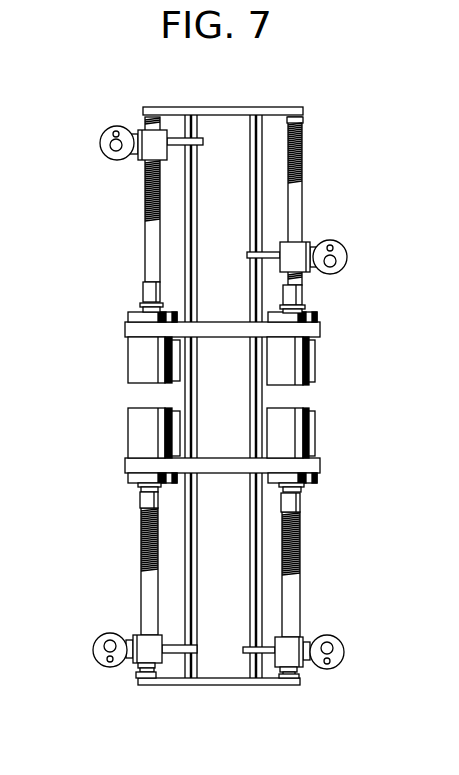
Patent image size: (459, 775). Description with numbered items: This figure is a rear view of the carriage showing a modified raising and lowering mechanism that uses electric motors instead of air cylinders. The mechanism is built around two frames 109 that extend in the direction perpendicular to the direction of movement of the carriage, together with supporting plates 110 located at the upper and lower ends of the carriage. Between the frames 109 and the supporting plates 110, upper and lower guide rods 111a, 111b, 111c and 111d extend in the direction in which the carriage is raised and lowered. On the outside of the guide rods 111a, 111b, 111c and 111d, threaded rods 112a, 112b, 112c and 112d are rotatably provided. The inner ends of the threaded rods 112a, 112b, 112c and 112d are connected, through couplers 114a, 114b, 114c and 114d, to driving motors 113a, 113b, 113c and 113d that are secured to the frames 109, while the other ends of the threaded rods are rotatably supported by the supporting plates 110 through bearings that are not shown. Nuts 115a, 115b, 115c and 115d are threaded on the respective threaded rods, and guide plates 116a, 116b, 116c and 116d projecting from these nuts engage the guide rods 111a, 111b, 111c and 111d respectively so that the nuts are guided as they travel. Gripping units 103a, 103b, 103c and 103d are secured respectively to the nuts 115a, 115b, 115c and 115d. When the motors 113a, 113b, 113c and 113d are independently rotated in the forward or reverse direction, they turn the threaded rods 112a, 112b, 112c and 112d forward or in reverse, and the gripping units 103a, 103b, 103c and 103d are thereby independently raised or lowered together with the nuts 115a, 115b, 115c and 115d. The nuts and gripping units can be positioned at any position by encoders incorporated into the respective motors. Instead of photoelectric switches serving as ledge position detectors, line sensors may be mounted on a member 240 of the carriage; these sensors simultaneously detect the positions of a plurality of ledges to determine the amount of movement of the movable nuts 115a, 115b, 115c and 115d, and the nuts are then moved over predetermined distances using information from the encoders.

The supporting plate 110 is at (212, 107).
The frame 109 is at (125, 329).
The guide rod 111a is at (198, 178).
The guide rod 111b is at (251, 218).
The guide rod 111c is at (194, 525).
The guide rod 111d is at (247, 567).
The threaded rod 112a is at (145, 236).
The threaded rod 112b is at (302, 158).
The threaded rod 112c is at (140, 548).
The threaded rod 112d is at (301, 549).
The driving motor 113a is at (128, 364).
The driving motor 113b is at (313, 365).
The driving motor 113c is at (128, 428).
The driving motor 113d is at (313, 430).
The coupler 114a is at (143, 290).
The coupler 114b is at (302, 296).
The coupler 114c is at (140, 497).
The coupler 114d is at (301, 503).
The nut 115a is at (141, 162).
The nut 115b is at (300, 243).
The nut 115c is at (135, 637).
The nut 115d is at (300, 638).
The guide plate 116a is at (203, 146).
The guide plate 116b is at (246, 254).
The guide plate 116c is at (199, 645).
The guide plate 116d is at (243, 649).
The gripping unit 103a is at (105, 131).
The gripping unit 103b is at (342, 269).
The gripping unit 103c is at (98, 662).
The gripping unit 103d is at (339, 665).
The member 240 is at (227, 385).